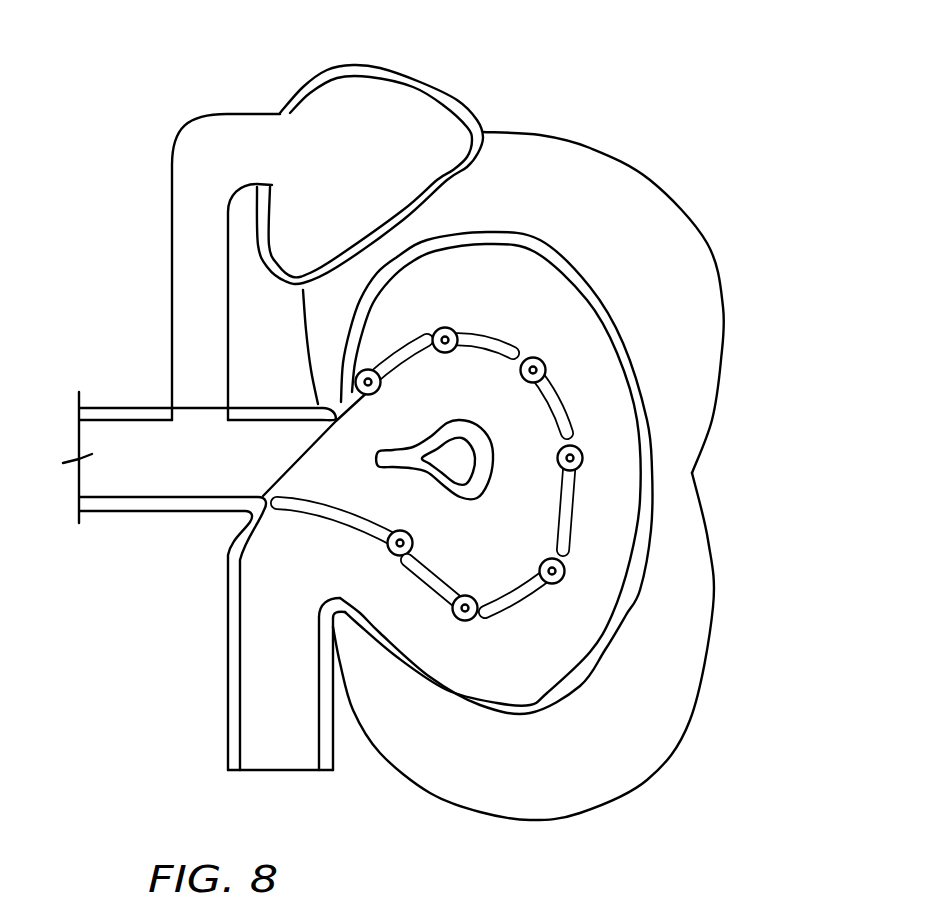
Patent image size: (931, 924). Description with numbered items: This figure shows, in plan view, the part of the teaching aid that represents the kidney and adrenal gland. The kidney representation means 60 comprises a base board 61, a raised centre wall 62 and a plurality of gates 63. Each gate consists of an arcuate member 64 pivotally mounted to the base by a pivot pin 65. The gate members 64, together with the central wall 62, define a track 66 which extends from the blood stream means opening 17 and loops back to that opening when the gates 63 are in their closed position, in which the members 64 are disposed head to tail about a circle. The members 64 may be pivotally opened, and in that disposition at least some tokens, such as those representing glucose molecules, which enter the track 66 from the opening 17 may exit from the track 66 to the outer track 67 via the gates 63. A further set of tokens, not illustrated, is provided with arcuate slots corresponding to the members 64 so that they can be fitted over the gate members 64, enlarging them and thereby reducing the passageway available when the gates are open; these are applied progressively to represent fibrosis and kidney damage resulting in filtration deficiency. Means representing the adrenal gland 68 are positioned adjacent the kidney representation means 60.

The blood stream means opening 17 is at (80, 480).
The kidney representation means 60 is at (703, 204).
The base board 61 is at (693, 392).
The raised centre wall 62 is at (468, 492).
The gates 63 is at (408, 340).
The arcuate member 64 is at (430, 583).
The pivot pin 65 is at (463, 620).
The track 66 is at (323, 470).
The track 67 is at (550, 647).
The means representing the adrenal gland 68 is at (451, 86).